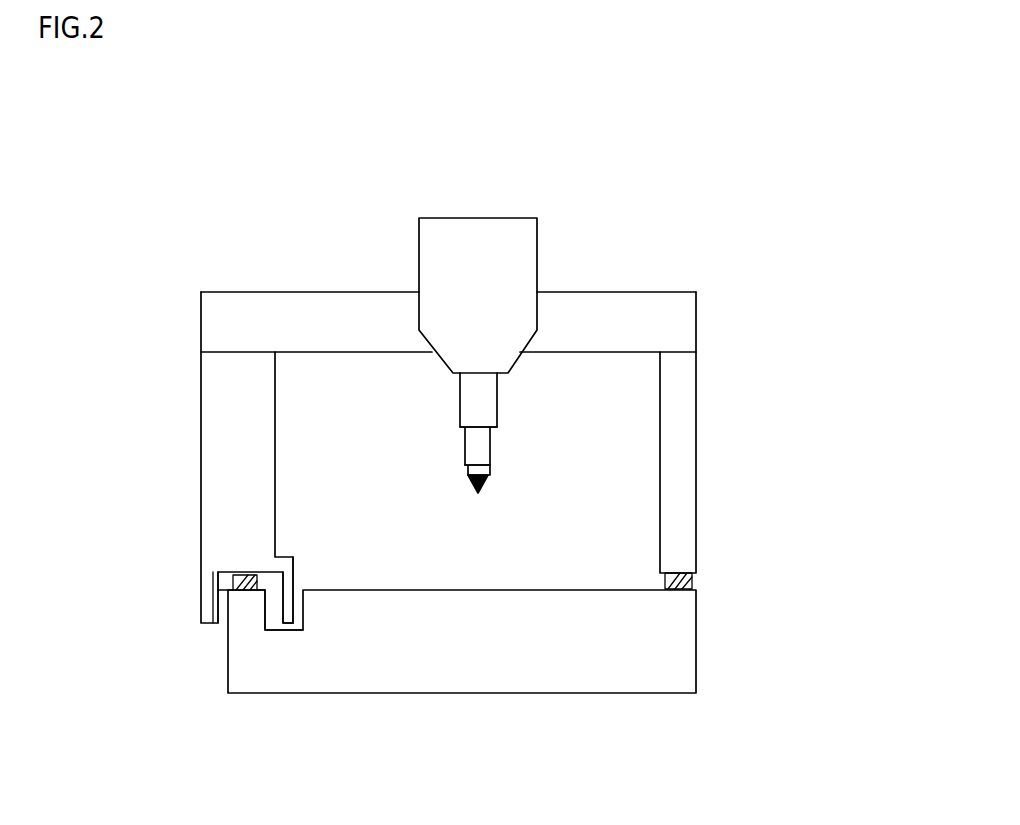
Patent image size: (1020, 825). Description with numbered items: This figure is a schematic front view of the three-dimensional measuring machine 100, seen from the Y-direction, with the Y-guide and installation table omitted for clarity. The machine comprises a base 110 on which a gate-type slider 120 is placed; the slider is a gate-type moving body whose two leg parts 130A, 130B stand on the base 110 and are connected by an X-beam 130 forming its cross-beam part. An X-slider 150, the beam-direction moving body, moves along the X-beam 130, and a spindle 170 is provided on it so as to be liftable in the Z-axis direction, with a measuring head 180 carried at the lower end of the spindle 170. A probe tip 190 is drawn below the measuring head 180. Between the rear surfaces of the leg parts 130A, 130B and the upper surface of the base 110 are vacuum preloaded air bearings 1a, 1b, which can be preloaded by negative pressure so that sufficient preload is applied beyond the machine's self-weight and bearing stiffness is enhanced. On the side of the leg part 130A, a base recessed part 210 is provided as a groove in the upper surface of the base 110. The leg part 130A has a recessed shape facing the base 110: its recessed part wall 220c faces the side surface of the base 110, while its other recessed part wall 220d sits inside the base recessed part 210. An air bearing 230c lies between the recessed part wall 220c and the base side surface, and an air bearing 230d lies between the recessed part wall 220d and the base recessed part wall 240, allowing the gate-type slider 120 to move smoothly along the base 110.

The three-dimensional measuring machine 100 is at (490, 163).
The base 110 is at (607, 588).
The gate-type slider 120 is at (318, 288).
The X-beam 130 is at (682, 322).
The leg part 130A is at (200, 431).
The leg part 130B is at (680, 425).
The X-slider 150 is at (540, 236).
The spindle 170 is at (497, 400).
The measuring head 180 is at (490, 447).
The nozzle tip 190 is at (476, 485).
The air bearing 1a is at (232, 581).
The air bearing 1b is at (694, 581).
The base recessed part 210 is at (302, 590).
The recessed part wall 220c is at (208, 606).
The recessed part wall 220d is at (303, 612).
The air bearing 230c is at (224, 620).
The air bearing 230d is at (268, 600).
The base recessed part wall 240 is at (263, 607).